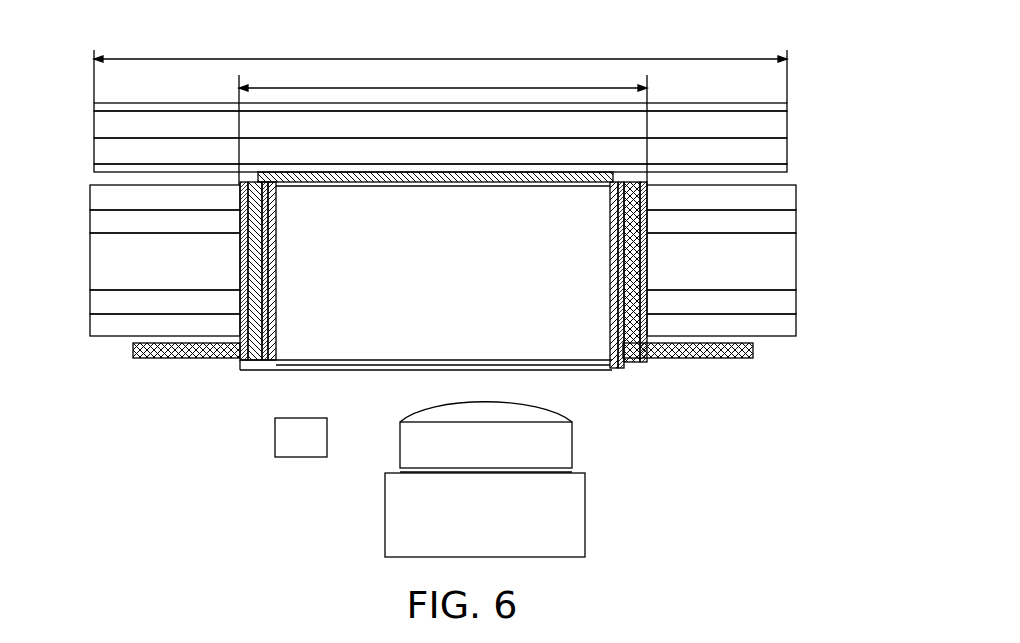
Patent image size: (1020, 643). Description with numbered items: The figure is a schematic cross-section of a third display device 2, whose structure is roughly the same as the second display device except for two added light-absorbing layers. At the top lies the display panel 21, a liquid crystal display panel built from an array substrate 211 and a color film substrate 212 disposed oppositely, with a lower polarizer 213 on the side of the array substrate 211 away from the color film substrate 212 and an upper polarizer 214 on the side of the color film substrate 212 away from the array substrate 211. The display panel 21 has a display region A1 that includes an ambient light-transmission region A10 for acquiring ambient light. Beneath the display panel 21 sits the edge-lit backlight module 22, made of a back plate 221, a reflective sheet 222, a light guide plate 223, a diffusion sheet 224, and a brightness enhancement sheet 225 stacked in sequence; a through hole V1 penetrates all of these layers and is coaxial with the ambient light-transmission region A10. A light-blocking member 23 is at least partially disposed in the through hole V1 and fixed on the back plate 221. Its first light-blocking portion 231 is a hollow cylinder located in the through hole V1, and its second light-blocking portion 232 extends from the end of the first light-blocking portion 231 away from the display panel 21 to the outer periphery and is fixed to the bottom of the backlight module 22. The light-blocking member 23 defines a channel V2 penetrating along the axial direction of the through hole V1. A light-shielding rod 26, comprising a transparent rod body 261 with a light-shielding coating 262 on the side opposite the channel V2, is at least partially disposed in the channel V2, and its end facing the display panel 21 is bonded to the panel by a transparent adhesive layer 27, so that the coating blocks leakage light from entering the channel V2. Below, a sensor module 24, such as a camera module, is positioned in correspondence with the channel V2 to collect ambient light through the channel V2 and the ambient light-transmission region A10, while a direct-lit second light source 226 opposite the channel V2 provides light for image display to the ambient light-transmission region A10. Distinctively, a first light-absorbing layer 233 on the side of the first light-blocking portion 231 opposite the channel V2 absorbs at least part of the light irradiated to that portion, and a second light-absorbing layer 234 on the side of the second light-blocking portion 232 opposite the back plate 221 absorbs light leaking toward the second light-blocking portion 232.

The display device 2 is at (798, 86).
The display panel 21 is at (488, 143).
The array substrate 211 is at (787, 147).
The color film substrate 212 is at (787, 127).
The lower polarizer 213 is at (787, 167).
The upper polarizer 214 is at (787, 105).
The backlight module 22 is at (491, 264).
The back plate 221 is at (470, 328).
The reflective sheet 222 is at (796, 300).
The light guide plate 223 is at (796, 262).
The diffusion sheet 224 is at (796, 218).
The brightness enhancement sheet 225 is at (796, 197).
The second light source 226 is at (327, 437).
The light-blocking member 23 is at (681, 318).
The first light-blocking portion 231 is at (640, 310).
The second light-blocking portion 232 is at (700, 345).
The first light-absorbing layer 233 is at (240, 303).
The second light-absorbing layer 234 is at (133, 344).
The sensor module 24 is at (585, 497).
The light-shielding rod 26 is at (389, 436).
The rod body 261 is at (287, 366).
The light-shielding coating 262 is at (255, 368).
The transparent adhesive layer 27 is at (545, 186).
The through hole V1 is at (240, 220).
The channel V2 is at (240, 267).
The display region A1 is at (440, 72).
The ambient light-transmission region A10 is at (443, 126).